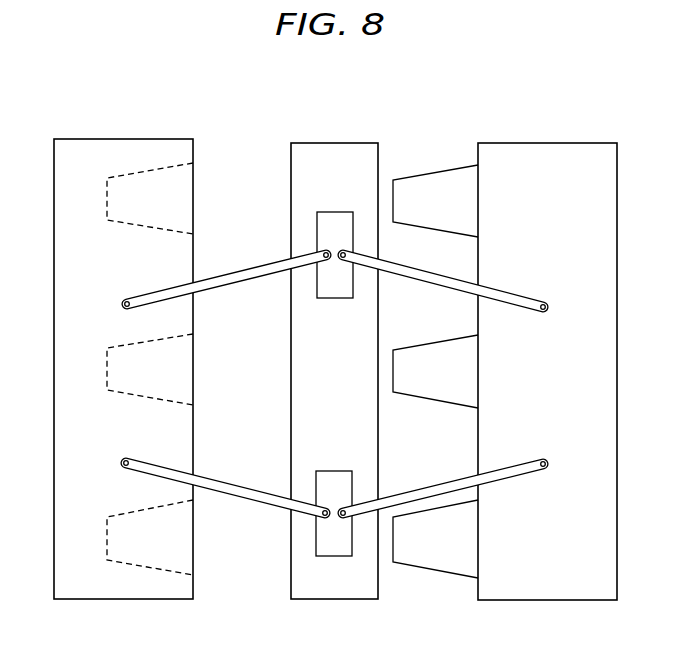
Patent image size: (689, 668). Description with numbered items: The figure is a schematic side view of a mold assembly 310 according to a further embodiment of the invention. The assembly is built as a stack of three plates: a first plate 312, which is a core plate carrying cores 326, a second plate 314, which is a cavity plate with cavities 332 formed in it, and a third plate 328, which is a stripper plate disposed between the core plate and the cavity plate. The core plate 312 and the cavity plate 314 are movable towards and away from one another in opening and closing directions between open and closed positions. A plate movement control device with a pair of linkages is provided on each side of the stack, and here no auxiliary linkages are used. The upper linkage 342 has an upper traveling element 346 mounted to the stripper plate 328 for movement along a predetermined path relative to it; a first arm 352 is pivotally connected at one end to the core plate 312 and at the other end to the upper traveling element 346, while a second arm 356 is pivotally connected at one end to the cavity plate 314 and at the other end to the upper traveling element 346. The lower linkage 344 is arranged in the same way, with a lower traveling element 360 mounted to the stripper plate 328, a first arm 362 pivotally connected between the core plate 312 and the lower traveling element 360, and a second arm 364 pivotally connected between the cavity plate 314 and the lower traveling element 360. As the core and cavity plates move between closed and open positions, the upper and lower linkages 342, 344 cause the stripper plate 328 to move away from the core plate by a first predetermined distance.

The mold assembly 310 is at (531, 102).
The first plate 312 is at (540, 136).
The second plate 314 is at (122, 122).
The cores 326 is at (413, 175).
The third plate 328 is at (351, 132).
The cavities 332 is at (106, 574).
The upper linkage 342 is at (321, 200).
The lower linkage 344 is at (316, 565).
The upper traveling element 346 is at (353, 232).
The first arm 352 is at (157, 287).
The second arm 356 is at (497, 275).
The lower traveling element 360 is at (337, 471).
The first arm 362 is at (167, 482).
The second arm 364 is at (462, 497).